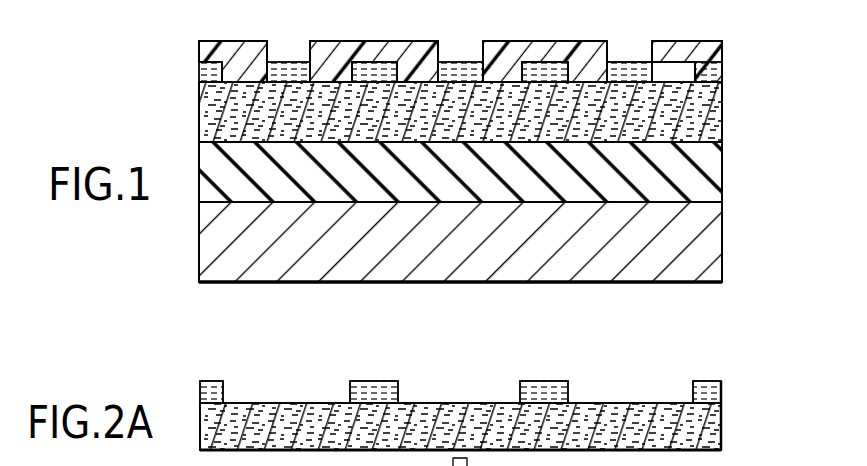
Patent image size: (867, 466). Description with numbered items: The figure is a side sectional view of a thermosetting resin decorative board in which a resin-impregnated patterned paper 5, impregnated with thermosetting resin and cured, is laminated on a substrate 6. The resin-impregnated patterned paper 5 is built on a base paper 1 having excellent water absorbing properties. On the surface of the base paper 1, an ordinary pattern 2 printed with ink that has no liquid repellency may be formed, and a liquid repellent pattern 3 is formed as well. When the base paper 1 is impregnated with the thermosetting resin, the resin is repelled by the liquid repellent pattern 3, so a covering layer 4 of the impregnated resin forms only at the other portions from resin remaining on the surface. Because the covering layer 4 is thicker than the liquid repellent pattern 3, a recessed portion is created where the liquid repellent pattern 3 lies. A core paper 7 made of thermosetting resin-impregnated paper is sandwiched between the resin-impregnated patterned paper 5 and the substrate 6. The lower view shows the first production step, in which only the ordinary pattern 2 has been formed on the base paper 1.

In FIG. 1, the base paper 1 is at (722, 118).
In FIG. 2A, the base paper 1 is at (721, 420).
In FIG. 1, the ordinary pattern 2 is at (722, 72).
In FIG. 2A, the ordinary pattern 2 is at (721, 392).
In FIG. 1, the liquid repellent pattern 3 is at (628, 63).
In FIG. 1, the covering layer of the impregnated resin 4 is at (722, 48).
In FIG. 1, the resin-impregnated patterned paper 5 is at (494, 72).
In FIG. 1, the substrate 6 is at (722, 266).
In FIG. 1, the core paper 7 is at (722, 183).